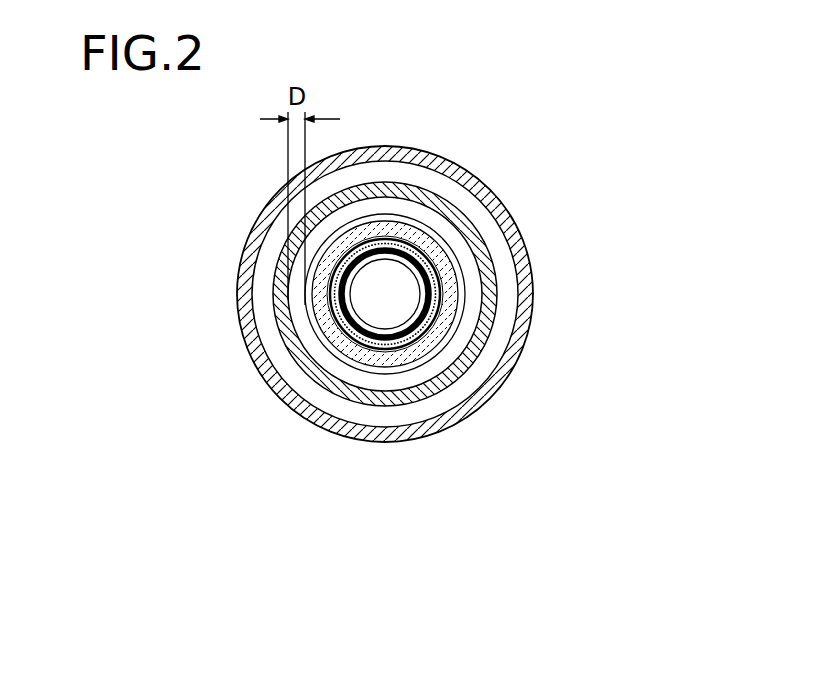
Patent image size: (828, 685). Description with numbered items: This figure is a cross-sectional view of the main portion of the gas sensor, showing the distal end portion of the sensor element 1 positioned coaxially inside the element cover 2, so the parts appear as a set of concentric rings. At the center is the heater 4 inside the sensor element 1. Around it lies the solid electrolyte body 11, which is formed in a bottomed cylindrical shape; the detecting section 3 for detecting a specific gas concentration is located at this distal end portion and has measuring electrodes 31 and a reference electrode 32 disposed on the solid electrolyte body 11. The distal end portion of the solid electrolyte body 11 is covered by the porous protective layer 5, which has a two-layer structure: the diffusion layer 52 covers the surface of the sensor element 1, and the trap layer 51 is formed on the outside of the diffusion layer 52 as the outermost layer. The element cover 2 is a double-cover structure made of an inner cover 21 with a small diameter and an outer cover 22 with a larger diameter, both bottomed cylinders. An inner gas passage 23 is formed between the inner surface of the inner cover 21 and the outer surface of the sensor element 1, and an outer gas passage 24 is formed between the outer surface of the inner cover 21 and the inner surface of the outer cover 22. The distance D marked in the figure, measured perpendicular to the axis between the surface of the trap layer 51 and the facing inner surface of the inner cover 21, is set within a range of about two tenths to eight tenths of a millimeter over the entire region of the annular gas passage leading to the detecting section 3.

The sensor element 1 is at (307, 345).
The element cover 2 is at (612, 150).
The inner cover 21 is at (452, 197).
The outer cover 22 is at (486, 207).
The inner gas passage 23 is at (495, 267).
The outer gas passage 24 is at (507, 300).
The detecting section 3 is at (195, 485).
The measuring electrodes 31 is at (357, 355).
The solid electrolyte body 11 is at (382, 342).
The reference electrode 32 is at (423, 337).
The heater 4 is at (385, 300).
The porous protective layer 5 is at (614, 357).
The trap layer 51 is at (447, 316).
The diffusion layer 52 is at (452, 338).